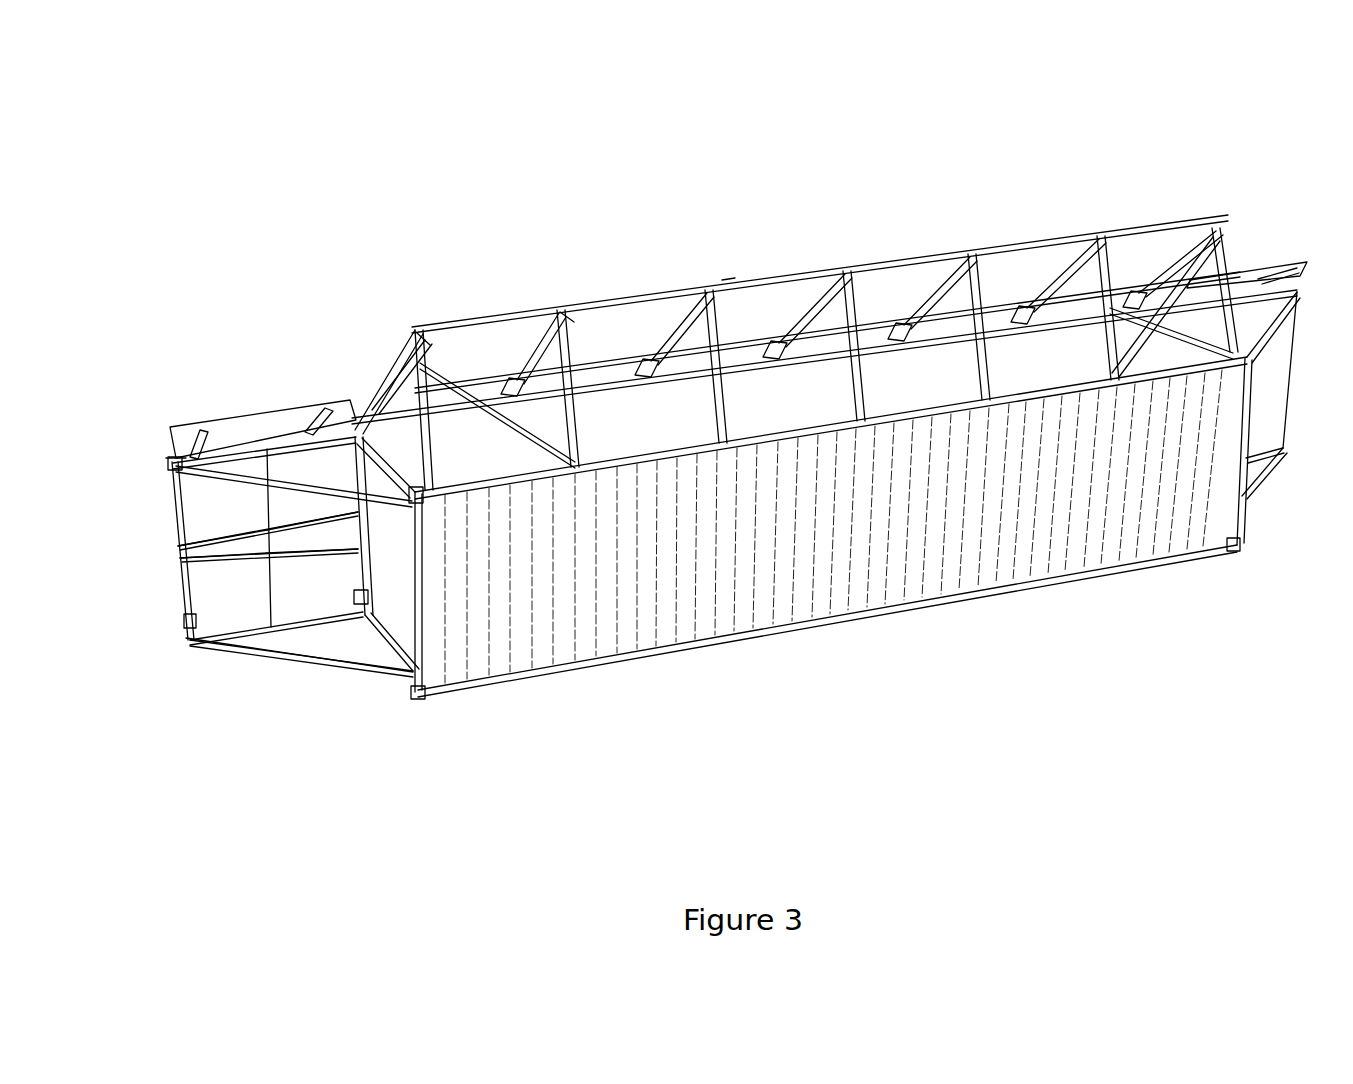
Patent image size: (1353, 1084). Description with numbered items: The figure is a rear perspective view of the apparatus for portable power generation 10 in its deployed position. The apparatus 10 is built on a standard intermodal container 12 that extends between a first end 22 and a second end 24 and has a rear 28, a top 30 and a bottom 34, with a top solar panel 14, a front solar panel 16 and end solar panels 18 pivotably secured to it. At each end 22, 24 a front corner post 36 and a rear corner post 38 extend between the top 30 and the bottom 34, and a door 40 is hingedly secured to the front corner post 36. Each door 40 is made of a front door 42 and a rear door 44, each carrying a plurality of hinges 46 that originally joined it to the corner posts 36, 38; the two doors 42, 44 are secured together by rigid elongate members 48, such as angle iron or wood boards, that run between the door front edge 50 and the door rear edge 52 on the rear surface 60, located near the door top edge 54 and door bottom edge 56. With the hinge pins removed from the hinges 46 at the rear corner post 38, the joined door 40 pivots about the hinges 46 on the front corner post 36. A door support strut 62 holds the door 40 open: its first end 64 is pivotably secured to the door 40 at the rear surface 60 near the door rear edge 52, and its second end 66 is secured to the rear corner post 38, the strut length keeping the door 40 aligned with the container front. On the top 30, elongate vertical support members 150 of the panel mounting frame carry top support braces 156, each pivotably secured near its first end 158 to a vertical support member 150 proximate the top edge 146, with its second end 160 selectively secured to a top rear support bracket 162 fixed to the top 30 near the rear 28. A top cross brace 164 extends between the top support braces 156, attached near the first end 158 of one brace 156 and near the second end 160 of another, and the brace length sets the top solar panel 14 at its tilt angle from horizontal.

The apparatus for portable power generation 10 is at (1155, 138).
The intermodal container 12 is at (1146, 525).
The top solar panel 14 is at (778, 270).
The front solar panel 16 is at (258, 475).
The end solar panel 18 is at (263, 415).
The first end 22 is at (1268, 541).
The second end 24 is at (392, 705).
The rear 28 is at (920, 572).
The top 30 is at (913, 378).
The bottom 34 is at (791, 635).
The front corner post 36 is at (329, 632).
The rear corner post 38 is at (420, 652).
The door 40 is at (182, 602).
The front door 42 is at (290, 605).
The rear door 44 is at (236, 615).
The hinges 46 is at (178, 540).
The rigid elongate member 48 is at (310, 440).
The door front edge 50 is at (330, 400).
The door rear edge 52 is at (180, 620).
The door top edge 54 is at (227, 442).
The door bottom edge 56 is at (350, 625).
The rear surface 60 is at (206, 490).
The door support strut 62 is at (175, 455).
The first end 64 is at (170, 465).
The second end 66 is at (417, 505).
The top edge 146 is at (724, 272).
The elongate vertical support member 150 is at (350, 388).
The top support brace 156 is at (445, 397).
The first end 158 is at (432, 336).
The second end 160 is at (570, 474).
The top rear support bracket 162 is at (715, 452).
The top cross brace 164 is at (483, 355).